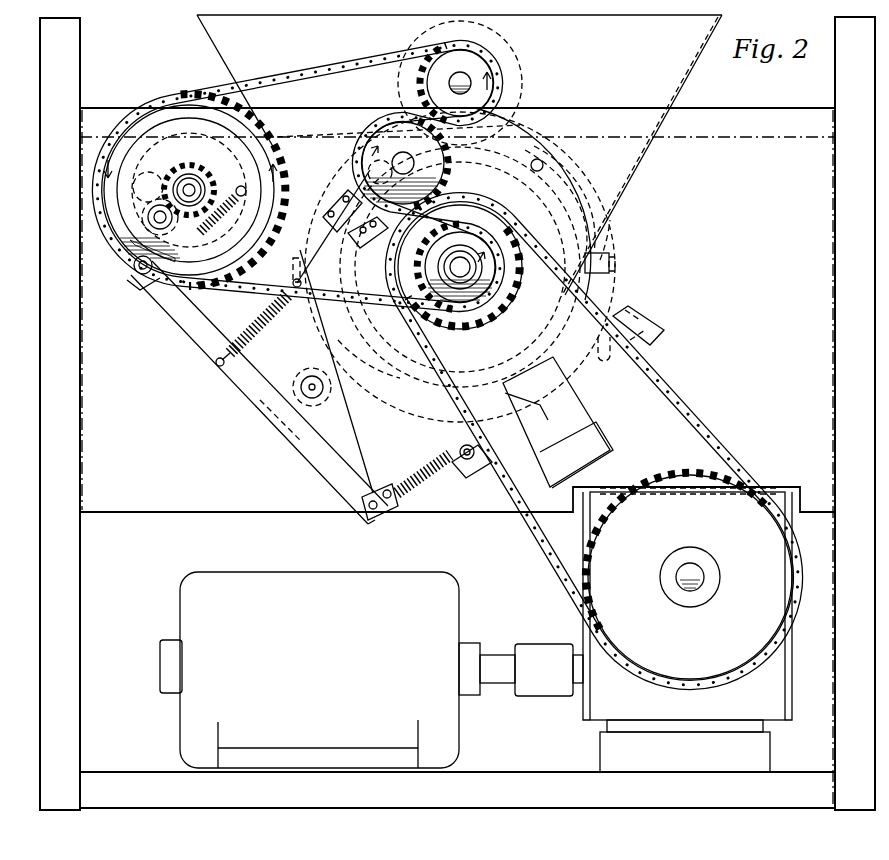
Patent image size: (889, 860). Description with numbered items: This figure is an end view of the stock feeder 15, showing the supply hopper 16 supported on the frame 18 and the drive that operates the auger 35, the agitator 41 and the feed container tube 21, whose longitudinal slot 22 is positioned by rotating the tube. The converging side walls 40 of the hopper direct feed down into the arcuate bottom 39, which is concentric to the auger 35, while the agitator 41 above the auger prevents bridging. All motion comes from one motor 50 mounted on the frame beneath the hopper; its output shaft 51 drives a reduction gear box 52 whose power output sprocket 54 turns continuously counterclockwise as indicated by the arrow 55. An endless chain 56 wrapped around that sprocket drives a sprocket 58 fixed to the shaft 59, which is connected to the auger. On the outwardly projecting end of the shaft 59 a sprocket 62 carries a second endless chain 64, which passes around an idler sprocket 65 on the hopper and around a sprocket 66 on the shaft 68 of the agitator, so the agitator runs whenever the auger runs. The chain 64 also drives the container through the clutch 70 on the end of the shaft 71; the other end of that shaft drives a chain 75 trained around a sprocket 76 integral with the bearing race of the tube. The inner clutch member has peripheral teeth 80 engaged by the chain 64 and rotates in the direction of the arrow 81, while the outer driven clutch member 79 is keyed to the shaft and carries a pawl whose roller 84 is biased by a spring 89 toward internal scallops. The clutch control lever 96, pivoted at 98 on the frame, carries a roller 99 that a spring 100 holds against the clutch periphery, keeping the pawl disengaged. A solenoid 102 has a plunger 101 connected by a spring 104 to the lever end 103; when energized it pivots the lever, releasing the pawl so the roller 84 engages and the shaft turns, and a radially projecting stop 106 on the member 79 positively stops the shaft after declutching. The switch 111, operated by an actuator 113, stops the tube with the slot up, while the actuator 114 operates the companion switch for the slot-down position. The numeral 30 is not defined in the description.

The stock feeder 15 is at (650, 224).
The supply hopper 16 is at (672, 83).
The frame 18 is at (43, 628).
The feed container tube 21 is at (376, 362).
The longitudinal slot 22 is at (540, 135).
The housing 30 is at (8, 174).
The auger 35 is at (372, 331).
The bottom of the hopper 39 is at (430, 388).
The side walls 40 is at (632, 166).
The agitator 41 is at (418, 35).
The motor 50 is at (183, 603).
The output shaft 51 is at (497, 660).
The reduction gear box 52 is at (775, 688).
The power output sprocket 54 is at (657, 503).
The arrow 55 is at (746, 647).
The endless chain 56 is at (660, 383).
The sprocket 58 is at (492, 319).
The shaft 59 is at (512, 288).
The sprocket 62 is at (393, 263).
The endless chain 64 is at (300, 75).
The idler sprocket 65 is at (450, 179).
The sprocket 66 is at (488, 64).
The shaft 68 is at (449, 80).
The clutch 70 is at (140, 84).
The shaft 71 is at (198, 183).
The chain 75 is at (356, 145).
The sprocket 76 is at (592, 182).
The outer driven clutch member 79 is at (107, 205).
The peripheral teeth 80 is at (274, 133).
The arrow 81 is at (97, 172).
The roller 84 is at (158, 204).
The spring 89 is at (232, 218).
The clutch control lever 96 is at (265, 398).
The pivot 98 is at (321, 394).
The roller 99 is at (137, 278).
The spring 100 is at (278, 336).
The plunger 101 is at (468, 462).
The solenoid 102 is at (574, 405).
The end of the control lever 103 is at (380, 514).
The spring 104 is at (420, 462).
The stop 106 is at (136, 268).
The switch 111 is at (660, 326).
The actuator 113 is at (292, 268).
The actuator 114 is at (620, 265).